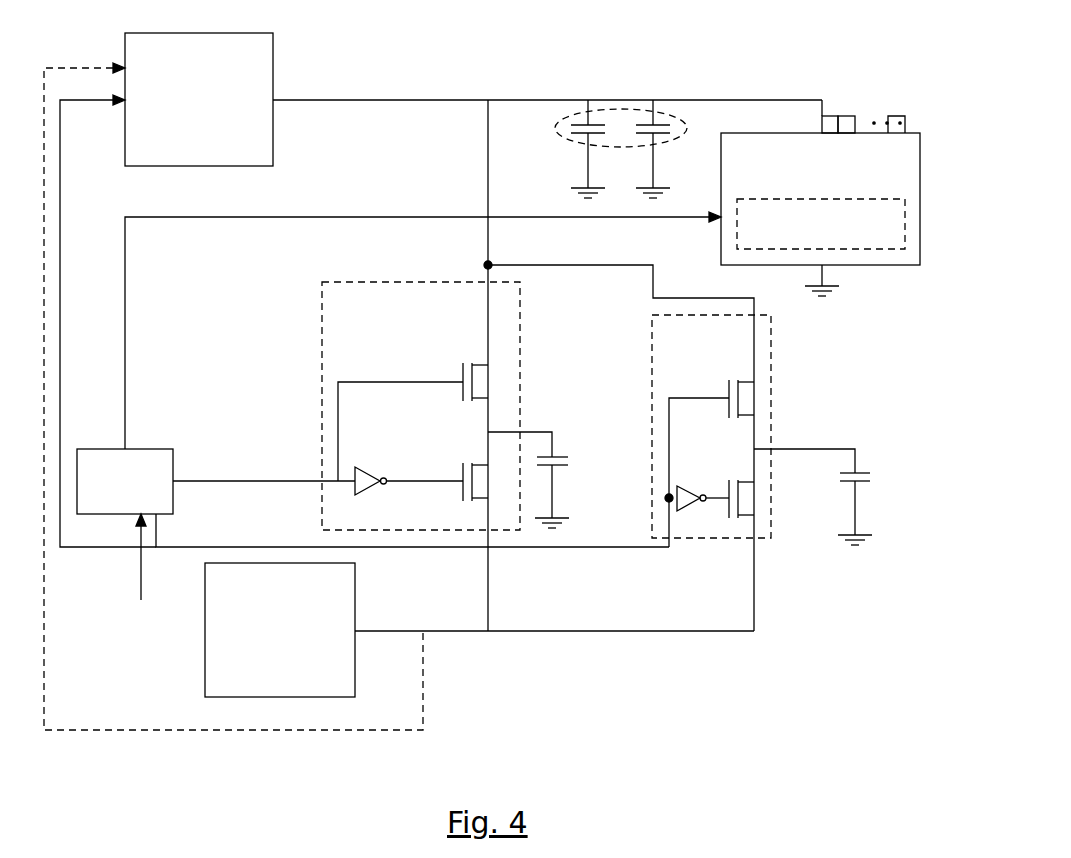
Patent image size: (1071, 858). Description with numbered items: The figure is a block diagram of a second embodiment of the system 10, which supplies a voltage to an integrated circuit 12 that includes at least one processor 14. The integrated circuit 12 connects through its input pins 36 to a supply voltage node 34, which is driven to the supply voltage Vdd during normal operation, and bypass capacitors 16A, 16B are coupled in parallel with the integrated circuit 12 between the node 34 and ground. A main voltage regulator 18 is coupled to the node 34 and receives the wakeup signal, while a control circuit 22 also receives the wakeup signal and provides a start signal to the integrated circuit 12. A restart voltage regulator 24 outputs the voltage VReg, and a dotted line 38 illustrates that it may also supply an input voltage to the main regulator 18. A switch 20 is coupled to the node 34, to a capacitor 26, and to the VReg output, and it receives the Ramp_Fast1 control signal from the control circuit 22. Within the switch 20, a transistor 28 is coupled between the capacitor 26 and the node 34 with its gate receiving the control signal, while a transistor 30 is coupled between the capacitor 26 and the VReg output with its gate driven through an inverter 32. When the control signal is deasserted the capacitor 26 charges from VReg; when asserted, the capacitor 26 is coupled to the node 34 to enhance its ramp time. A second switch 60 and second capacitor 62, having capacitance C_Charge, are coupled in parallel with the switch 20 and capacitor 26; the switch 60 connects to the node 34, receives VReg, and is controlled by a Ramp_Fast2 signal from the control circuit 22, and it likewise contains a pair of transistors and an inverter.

The system 10 is at (492, 402).
The integrated circuit 12 is at (821, 152).
The processor 14 is at (821, 224).
The bypass capacitor 16A is at (643, 103).
The bypass capacitor 16B is at (690, 126).
The main voltage regulator 18 is at (199, 99).
The switch 20 is at (421, 406).
The control circuit 22 is at (125, 481).
The restart voltage regulator 24 is at (280, 630).
The capacitor 26 is at (563, 442).
The transistor 28 is at (413, 407).
The transistor 30 is at (437, 447).
The inverter 32 is at (399, 466).
The supply voltage node 34 is at (547, 64).
The input pins 36 is at (852, 92).
The dotted line 38 is at (233, 429).
The second switch 60 is at (711, 431).
The second capacitor 62 is at (847, 458).